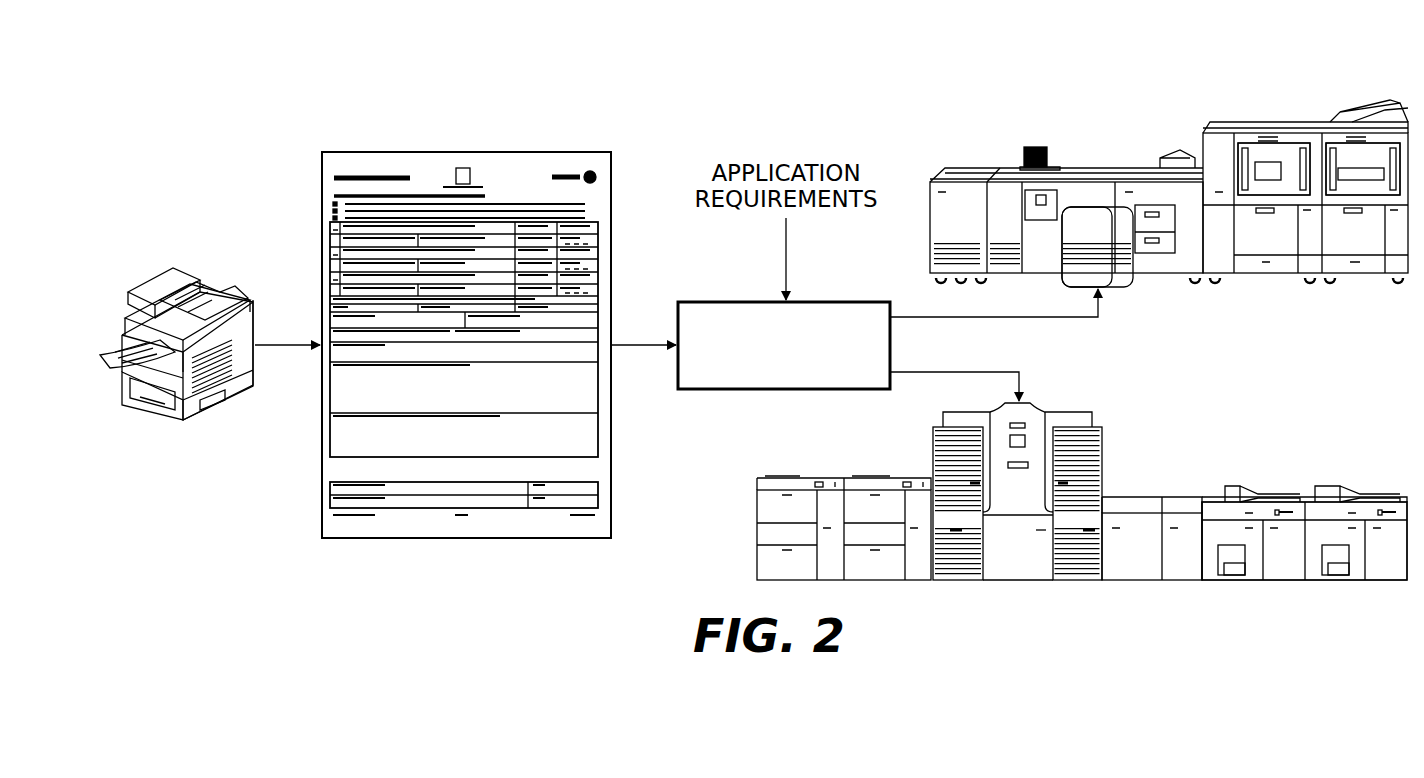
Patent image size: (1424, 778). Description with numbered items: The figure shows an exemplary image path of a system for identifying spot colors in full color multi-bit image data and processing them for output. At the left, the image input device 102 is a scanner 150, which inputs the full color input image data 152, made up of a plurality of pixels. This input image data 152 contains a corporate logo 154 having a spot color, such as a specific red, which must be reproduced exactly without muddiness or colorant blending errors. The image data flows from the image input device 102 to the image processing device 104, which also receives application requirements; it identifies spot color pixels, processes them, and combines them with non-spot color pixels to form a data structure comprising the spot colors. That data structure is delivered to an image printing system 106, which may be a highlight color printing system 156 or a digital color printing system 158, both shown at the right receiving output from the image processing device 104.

The scanner 150 is at (190, 257).
The image input device 102 is at (202, 292).
The full color input image data 152 is at (375, 150).
The corporate logo 154 is at (565, 160).
The image processing device 104 is at (822, 302).
The highlight color printing system 156 is at (1012, 128).
The digital color printing system 158 is at (884, 455).
The image printing system 106 is at (1342, 150).